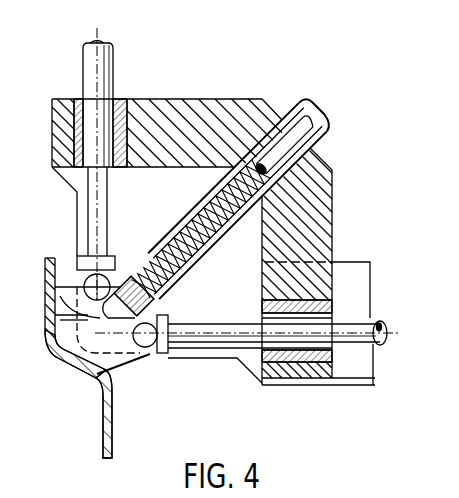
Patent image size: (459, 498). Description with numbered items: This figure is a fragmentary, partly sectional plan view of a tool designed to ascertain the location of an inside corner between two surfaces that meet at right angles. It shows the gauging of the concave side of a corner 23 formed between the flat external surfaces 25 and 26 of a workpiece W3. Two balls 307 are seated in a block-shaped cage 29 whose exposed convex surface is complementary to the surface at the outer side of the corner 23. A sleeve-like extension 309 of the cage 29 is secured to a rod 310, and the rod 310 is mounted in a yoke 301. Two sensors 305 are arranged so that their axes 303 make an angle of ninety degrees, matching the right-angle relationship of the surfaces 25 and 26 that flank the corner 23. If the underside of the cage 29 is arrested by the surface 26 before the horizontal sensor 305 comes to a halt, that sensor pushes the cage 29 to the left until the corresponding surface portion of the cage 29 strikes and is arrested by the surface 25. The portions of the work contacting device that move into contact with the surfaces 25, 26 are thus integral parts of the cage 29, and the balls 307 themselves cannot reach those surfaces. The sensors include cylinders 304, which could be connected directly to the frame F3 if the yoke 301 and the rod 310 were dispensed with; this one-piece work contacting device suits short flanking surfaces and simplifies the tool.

The yoke 301 is at (332, 216).
The axes 303 is at (105, 46).
The cylinders 304 is at (108, 76).
The sensors 305 is at (86, 218).
The balls 307 is at (112, 270).
The sleeve-like extension 309 is at (165, 302).
The rod 310 is at (326, 126).
The cage 29 is at (72, 295).
The flat external surface 25 is at (57, 315).
The corner 23 is at (62, 357).
The flat external surface 26 is at (72, 375).
The workpiece W3 is at (95, 416).
The frame F3 is at (185, 188).